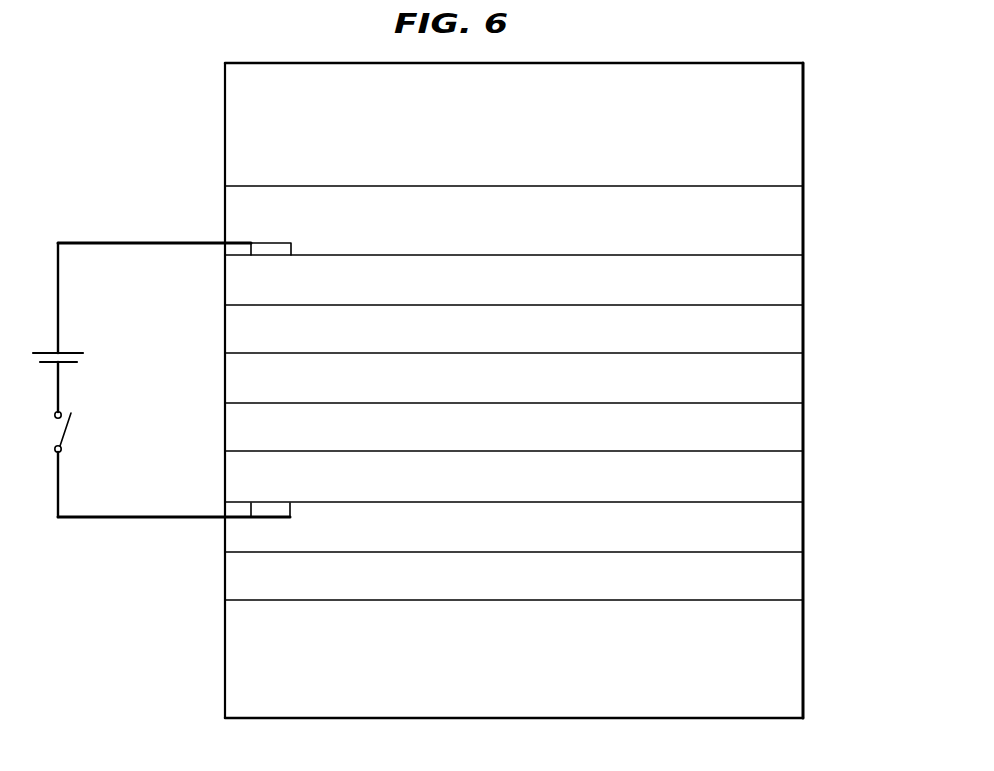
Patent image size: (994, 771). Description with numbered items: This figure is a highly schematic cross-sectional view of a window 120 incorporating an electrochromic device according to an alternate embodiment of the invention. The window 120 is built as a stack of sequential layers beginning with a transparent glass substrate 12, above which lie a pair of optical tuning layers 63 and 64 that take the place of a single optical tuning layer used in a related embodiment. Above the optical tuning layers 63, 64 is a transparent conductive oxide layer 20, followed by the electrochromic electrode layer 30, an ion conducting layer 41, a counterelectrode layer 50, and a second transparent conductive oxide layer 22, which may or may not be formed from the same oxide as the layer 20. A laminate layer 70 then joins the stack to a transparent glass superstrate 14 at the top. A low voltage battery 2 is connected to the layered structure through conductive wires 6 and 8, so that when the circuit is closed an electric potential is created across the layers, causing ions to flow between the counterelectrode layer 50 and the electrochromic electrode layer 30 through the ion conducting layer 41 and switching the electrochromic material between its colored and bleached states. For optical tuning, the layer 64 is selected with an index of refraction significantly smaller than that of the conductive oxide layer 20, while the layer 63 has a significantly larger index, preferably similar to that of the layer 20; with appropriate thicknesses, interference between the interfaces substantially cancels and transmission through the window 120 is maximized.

The low voltage battery 2 is at (43, 352).
The conductive wire 6 is at (107, 242).
The conductive wire 8 is at (122, 518).
The transparent glass substrate 12 is at (795, 635).
The transparent glass superstrate 14 is at (795, 112).
The transparent conductive oxide layer 20 is at (795, 473).
The transparent conductive oxide layer 22 is at (795, 283).
The electrochromic electrode layer 30 is at (795, 428).
The ion conducting layer 41 is at (795, 375).
The counterelectrode layer 50 is at (795, 328).
The optical tuning layer 63 is at (795, 589).
The optical tuning layer 64 is at (786, 523).
The laminate layer 70 is at (795, 220).
The window 120 is at (170, 650).